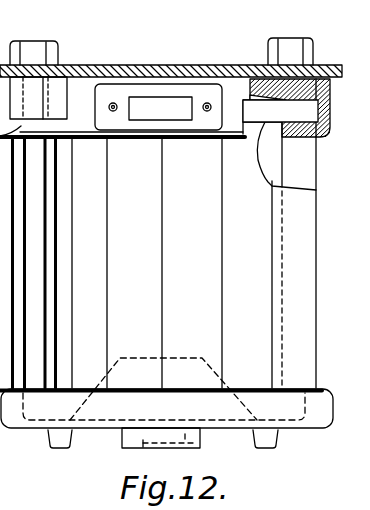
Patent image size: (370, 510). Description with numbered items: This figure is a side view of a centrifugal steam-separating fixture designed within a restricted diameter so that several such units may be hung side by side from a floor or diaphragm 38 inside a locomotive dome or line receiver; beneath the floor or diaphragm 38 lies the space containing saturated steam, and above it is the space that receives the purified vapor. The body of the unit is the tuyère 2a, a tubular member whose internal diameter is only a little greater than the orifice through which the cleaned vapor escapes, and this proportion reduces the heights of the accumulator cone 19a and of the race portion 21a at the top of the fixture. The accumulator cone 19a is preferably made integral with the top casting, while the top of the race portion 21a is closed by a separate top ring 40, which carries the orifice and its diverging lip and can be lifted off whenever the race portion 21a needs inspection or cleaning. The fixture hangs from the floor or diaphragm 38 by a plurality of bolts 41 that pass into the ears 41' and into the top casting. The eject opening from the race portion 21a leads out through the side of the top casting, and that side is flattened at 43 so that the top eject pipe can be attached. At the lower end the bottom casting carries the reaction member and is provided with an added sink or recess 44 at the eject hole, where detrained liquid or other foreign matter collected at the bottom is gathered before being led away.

The tuyère 2a is at (158, 257).
The floor or diaphragm 38 is at (232, 73).
The top ring 40 is at (270, 87).
The bolts 41 is at (54, 48).
The ears 41' is at (79, 77).
The flattened side 43 is at (159, 89).
The accumulator cone 19a is at (268, 108).
The race portion 21a is at (262, 104).
The sink or recess 44 is at (136, 433).